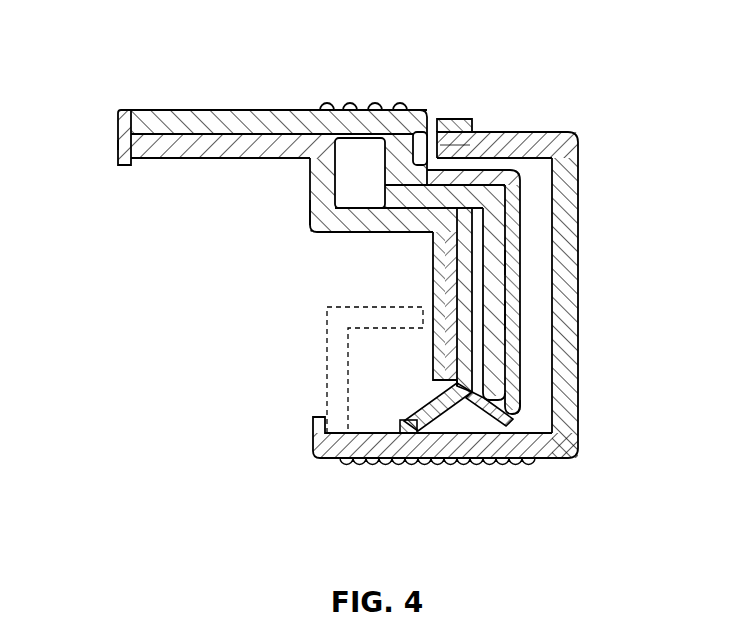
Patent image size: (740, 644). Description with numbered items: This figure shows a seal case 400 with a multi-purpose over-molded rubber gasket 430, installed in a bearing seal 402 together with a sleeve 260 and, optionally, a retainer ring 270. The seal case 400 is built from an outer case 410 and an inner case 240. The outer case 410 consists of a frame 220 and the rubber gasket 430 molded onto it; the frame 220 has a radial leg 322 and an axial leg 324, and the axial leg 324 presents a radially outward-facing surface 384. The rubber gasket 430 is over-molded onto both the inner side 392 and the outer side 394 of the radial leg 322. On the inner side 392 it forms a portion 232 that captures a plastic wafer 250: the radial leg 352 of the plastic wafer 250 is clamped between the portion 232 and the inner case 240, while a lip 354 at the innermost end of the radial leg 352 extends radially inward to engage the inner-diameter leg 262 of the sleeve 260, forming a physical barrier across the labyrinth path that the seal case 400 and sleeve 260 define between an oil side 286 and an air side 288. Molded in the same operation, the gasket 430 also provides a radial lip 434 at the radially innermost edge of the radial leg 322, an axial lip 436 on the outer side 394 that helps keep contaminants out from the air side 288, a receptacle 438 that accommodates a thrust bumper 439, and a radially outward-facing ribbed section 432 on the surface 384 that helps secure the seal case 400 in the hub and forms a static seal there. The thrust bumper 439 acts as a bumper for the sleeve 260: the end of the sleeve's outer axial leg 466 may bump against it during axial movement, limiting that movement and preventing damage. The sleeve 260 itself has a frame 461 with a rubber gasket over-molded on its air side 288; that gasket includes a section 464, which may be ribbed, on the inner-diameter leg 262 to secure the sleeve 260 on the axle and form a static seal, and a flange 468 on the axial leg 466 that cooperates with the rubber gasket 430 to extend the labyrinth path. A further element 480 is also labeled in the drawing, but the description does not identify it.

The seal case 400 is at (96, 133).
The bearing seal 402 is at (213, 378).
The frame 220 is at (265, 110).
The inner case 240 is at (195, 160).
The axial leg 324 is at (205, 110).
The radially outward-facing surface 384 is at (283, 100).
The outer case 410 is at (360, 84).
The ribbed section 432 is at (330, 99).
The thrust bumper 439 is at (412, 130).
The flange 468 is at (450, 118).
The receptacle 438 is at (455, 146).
The outer axial leg 466 is at (545, 130).
The frame 461 is at (580, 155).
The inner wall 480 is at (520, 262).
The outer side 394 is at (518, 285).
The sleeve 260 is at (480, 302).
The axial lip 436 is at (540, 313).
The rubber gasket 430 is at (527, 322).
The radial leg 322 is at (522, 392).
The radial lip 434 is at (580, 457).
The section 464 is at (512, 468).
The plastic wafer 250 is at (439, 422).
The inner-diameter leg 262 is at (455, 468).
The retainer ring 270 is at (327, 380).
The radial leg 352 is at (440, 375).
The lip 354 is at (415, 418).
The inner side 392 is at (463, 242).
The portion 232 is at (440, 298).
The oil side 286 is at (170, 307).
The air side 288 is at (656, 330).